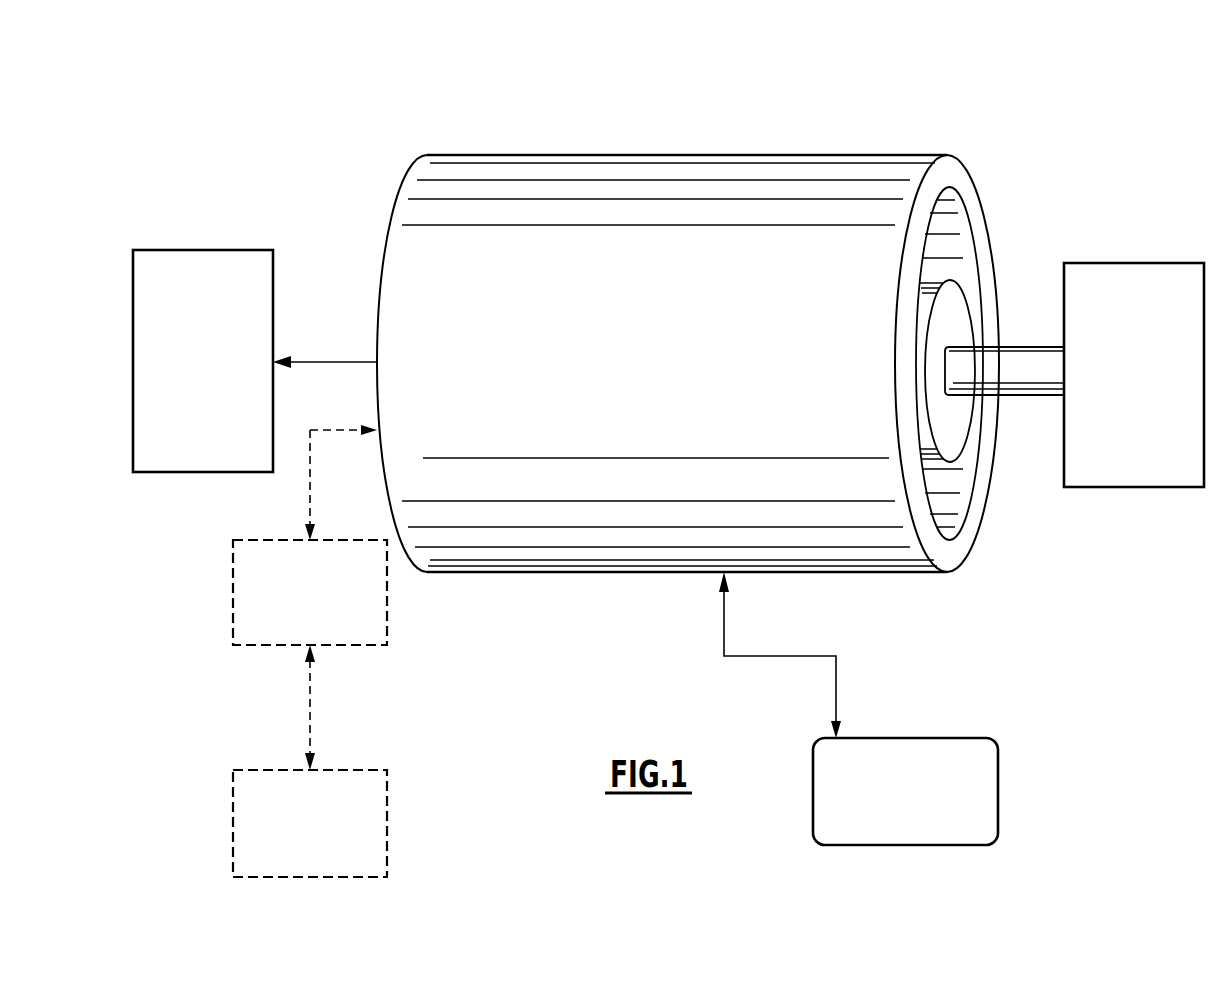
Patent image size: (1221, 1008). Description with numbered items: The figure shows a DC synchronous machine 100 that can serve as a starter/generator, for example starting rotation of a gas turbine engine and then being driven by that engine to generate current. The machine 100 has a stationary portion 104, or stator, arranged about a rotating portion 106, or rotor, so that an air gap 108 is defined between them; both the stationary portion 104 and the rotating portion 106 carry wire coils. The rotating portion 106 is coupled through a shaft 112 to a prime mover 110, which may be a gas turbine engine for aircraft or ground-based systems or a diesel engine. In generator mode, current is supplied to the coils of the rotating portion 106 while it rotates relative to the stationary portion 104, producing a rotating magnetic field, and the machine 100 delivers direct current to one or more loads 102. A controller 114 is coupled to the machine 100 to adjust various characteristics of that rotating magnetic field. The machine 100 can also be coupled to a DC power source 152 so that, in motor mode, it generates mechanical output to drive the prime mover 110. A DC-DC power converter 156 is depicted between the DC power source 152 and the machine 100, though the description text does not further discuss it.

The DC synchronous machine 100 is at (645, 107).
The load 102 is at (198, 250).
The stationary portion 104 is at (868, 573).
The rotating portion 106 is at (952, 441).
The air gap 108 is at (967, 272).
The prime mover 110 is at (1128, 263).
The shaft 112 is at (1012, 357).
The controller 114 is at (937, 738).
The DC power source 152 is at (388, 840).
The DC-DC power converter 156 is at (388, 608).